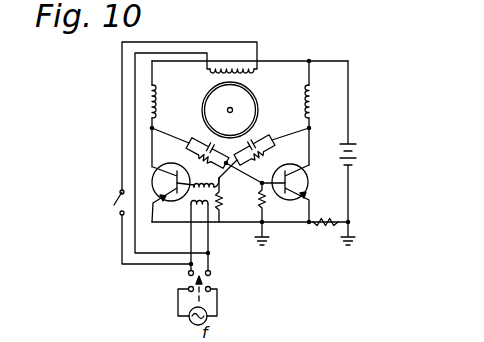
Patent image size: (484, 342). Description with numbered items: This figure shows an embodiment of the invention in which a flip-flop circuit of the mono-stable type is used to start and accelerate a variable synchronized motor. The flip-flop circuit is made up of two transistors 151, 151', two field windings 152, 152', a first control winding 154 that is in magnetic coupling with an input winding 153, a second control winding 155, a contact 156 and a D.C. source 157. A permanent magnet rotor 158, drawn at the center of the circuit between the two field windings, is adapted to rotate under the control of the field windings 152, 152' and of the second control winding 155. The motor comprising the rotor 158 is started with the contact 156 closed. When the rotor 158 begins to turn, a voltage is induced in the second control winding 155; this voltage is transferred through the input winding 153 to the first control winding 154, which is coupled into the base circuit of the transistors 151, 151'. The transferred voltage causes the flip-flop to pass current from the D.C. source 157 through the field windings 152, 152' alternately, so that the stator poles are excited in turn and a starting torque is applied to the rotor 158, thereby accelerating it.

The transistor 151 is at (137, 175).
The transistor 151' is at (301, 175).
The field winding 152 is at (175, 94).
The field winding 152' is at (327, 94).
The input winding 153 is at (195, 203).
The first control winding 154 is at (241, 198).
The second control winding 155 is at (256, 76).
The contact 156 is at (113, 204).
The D.C. source 157 is at (352, 141).
The permanent magnet rotor 158 is at (255, 96).